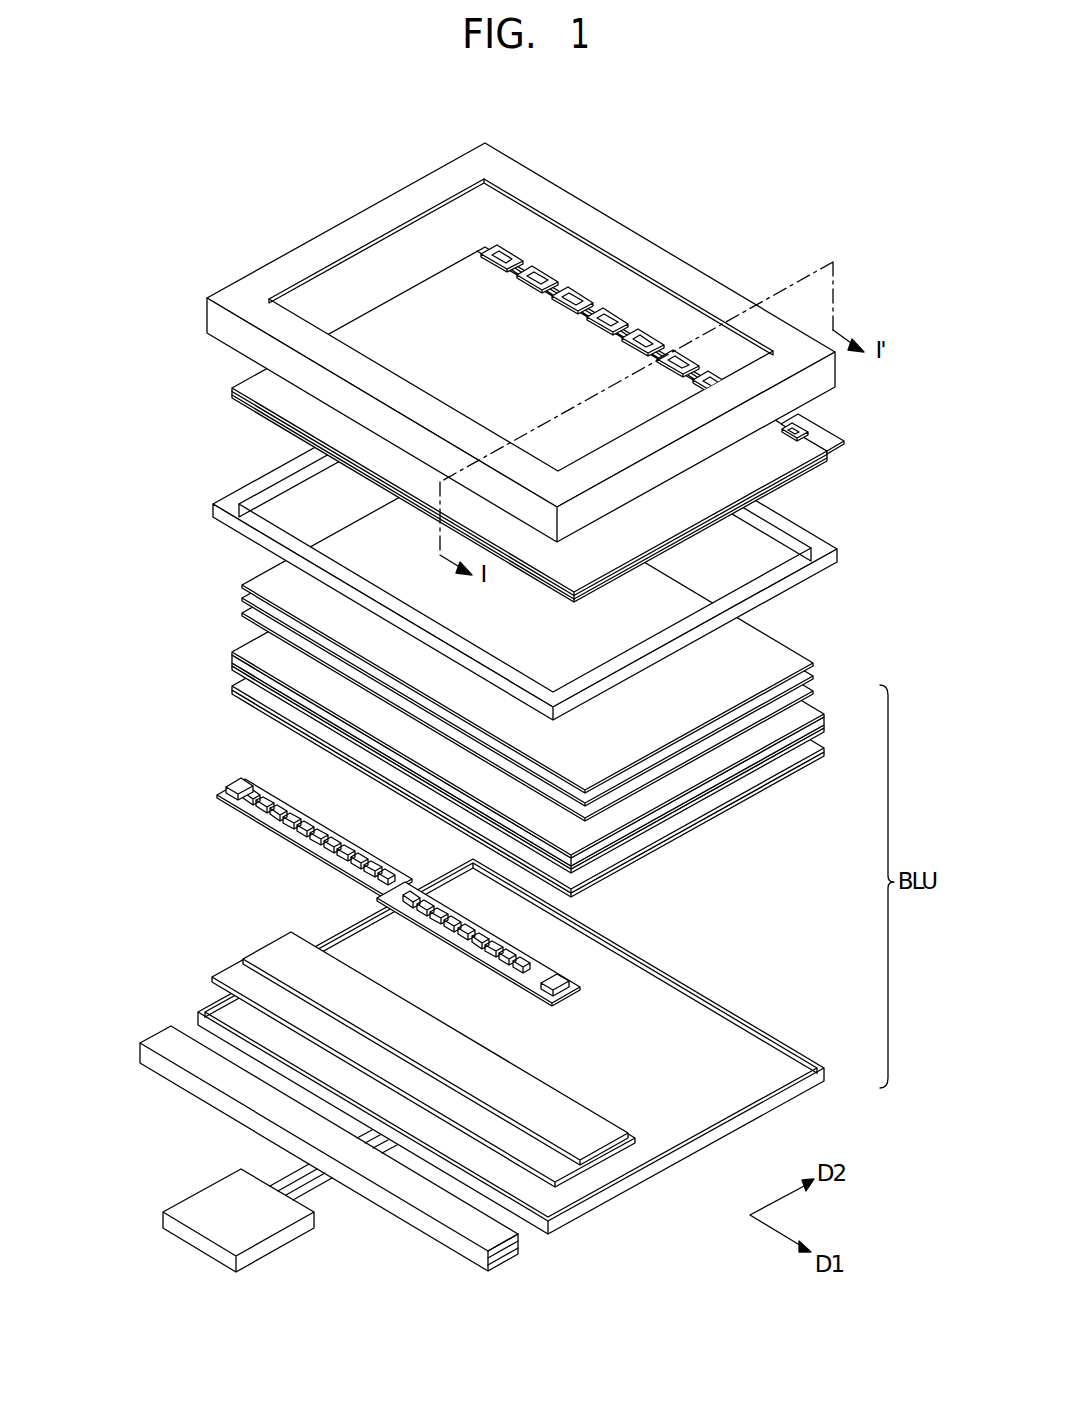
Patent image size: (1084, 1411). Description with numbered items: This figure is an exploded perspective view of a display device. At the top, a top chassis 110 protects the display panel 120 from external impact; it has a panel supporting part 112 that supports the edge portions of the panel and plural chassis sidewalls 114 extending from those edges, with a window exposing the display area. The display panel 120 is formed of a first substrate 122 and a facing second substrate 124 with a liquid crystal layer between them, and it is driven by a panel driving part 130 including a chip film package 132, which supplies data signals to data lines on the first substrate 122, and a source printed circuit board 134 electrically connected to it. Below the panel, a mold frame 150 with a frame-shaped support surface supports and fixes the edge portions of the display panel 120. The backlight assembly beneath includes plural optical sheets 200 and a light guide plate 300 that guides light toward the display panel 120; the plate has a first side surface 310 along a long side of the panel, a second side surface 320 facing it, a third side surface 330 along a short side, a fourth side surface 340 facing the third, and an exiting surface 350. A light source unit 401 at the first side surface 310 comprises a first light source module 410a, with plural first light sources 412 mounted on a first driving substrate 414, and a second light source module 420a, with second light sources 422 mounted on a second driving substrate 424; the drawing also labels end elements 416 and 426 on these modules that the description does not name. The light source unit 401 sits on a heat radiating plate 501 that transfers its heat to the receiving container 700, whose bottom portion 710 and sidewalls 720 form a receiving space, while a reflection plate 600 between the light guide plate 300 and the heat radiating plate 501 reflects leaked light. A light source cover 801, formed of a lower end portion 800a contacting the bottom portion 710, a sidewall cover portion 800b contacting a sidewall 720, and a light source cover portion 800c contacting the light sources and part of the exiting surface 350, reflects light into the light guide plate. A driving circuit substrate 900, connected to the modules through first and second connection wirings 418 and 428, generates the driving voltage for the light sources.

The top chassis 110 is at (466, 342).
The panel supporting part 112 is at (249, 287).
The chassis sidewalls 114 is at (489, 420).
The display panel 120 is at (587, 424).
The first substrate 122 is at (836, 432).
The second substrate 124 is at (782, 458).
The panel driving part 130 is at (605, 265).
The chip film package 132 is at (548, 272).
The source printed circuit board 134 is at (605, 303).
The mold frame 150 is at (840, 553).
The optical sheets 200 is at (818, 652).
The light guide plate 300 is at (513, 704).
The first side surface 310 is at (305, 722).
The second side surface 320 is at (818, 713).
The third side surface 330 is at (722, 784).
The fourth side surface 340 is at (243, 650).
The exiting surface 350 is at (645, 831).
The light source unit 401 is at (318, 890).
The first light source module 410a is at (257, 833).
The first light sources 412 is at (247, 812).
The first driving substrate 414 is at (245, 803).
The first connector 416 is at (208, 784).
The first connection wiring 418 is at (287, 1173).
The second light source module 420a is at (341, 942).
The second light sources 422 is at (392, 899).
The second driving substrate 424 is at (463, 937).
The second connector 426 is at (545, 995).
The second connection wiring 428 is at (325, 1197).
The heat radiating plate 501 is at (596, 1142).
The reflection plate 600 is at (821, 757).
The receiving container 700 is at (516, 1046).
The bottom portion 710 is at (648, 1023).
The sidewalls 720 is at (782, 1095).
The light source cover 801 is at (403, 1176).
The lower end portion 800a is at (493, 1264).
The sidewall cover portion 800b is at (503, 1254).
The light source cover portion 800c is at (518, 1238).
The driving circuit substrate 900 is at (197, 1240).